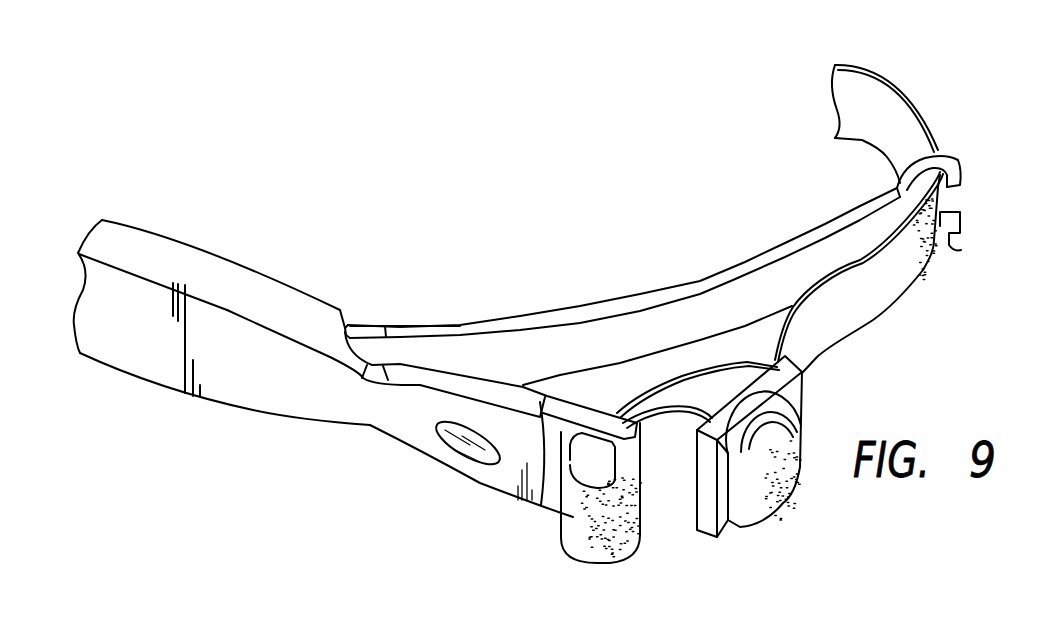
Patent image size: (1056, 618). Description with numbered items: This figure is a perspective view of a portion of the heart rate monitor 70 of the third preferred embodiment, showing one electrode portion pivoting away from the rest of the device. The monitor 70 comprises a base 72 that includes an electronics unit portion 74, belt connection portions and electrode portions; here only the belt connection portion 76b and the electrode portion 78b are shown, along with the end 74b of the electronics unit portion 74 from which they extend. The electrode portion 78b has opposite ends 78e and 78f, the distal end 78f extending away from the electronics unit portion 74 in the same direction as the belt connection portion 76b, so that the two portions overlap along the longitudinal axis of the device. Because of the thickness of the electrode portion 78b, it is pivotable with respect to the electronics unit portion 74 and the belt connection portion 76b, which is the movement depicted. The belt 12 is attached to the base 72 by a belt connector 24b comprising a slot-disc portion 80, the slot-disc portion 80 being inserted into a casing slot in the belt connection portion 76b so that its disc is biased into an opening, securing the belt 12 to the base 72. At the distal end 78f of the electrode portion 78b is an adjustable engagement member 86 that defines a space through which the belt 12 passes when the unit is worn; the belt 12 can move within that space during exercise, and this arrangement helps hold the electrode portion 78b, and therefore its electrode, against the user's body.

The belt 12 is at (883, 87).
The belt connector 24b is at (553, 497).
The heart rate monitor 70 is at (192, 200).
The base 72 is at (135, 245).
The electronics unit portion 74 is at (260, 390).
The end of electronics unit portion 74b is at (343, 317).
The belt connection portion 76b is at (492, 483).
The electrode portion 78b is at (583, 313).
The end of electrode portion 78e is at (373, 330).
The distal end of electrode portion 78f is at (897, 190).
The slot-disc portion 80 is at (460, 447).
The adjustable engagement member 86 is at (961, 233).